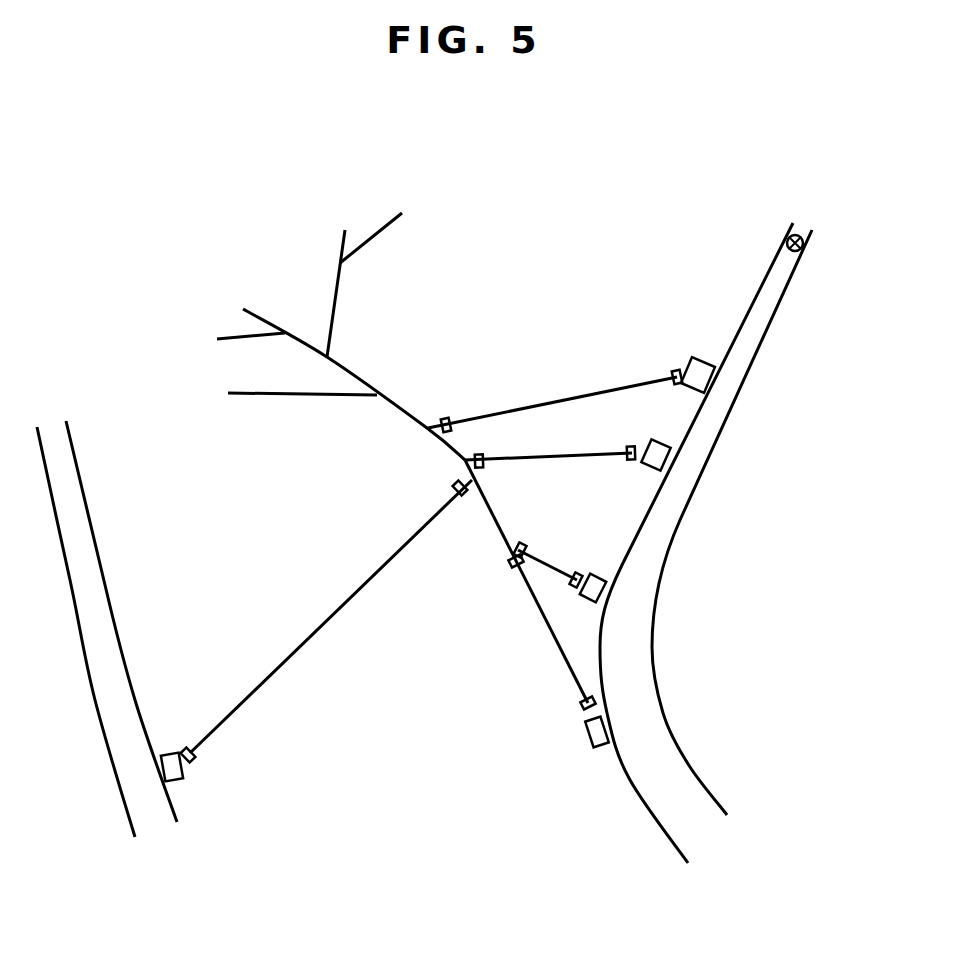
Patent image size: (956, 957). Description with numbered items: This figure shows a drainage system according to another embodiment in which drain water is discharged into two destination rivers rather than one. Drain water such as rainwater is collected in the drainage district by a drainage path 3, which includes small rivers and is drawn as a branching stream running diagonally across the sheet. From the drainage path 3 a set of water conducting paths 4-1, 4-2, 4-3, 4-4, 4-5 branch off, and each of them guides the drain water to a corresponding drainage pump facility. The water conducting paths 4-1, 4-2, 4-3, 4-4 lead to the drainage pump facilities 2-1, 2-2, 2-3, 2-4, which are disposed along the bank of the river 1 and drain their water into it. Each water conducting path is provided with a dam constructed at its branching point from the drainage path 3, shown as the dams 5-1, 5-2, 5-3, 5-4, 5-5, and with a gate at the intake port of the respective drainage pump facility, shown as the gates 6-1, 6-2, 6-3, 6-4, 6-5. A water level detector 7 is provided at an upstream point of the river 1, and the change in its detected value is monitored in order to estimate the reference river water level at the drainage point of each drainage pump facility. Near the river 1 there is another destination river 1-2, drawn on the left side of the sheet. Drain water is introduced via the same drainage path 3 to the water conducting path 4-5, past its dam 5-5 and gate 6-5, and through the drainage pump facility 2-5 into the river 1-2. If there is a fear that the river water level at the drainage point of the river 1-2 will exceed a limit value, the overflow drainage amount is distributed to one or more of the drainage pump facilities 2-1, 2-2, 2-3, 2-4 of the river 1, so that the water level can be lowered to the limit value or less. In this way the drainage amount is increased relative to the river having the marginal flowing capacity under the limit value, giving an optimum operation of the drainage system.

The river 1 is at (670, 543).
The destination river 1-2 is at (105, 595).
The drainage path 3 is at (362, 378).
The water conducting path 4-1 is at (557, 645).
The water conducting path 4-2 is at (557, 567).
The water conducting path 4-3 is at (574, 455).
The water conducting path 4-4 is at (562, 398).
The water conducting path 4-5 is at (307, 645).
The dam 5-1 is at (513, 562).
The dam 5-2 is at (520, 547).
The dam 5-3 is at (478, 455).
The dam 5-4 is at (447, 418).
The dam 5-5 is at (457, 483).
The gate 6-1 is at (585, 705).
The gate 6-2 is at (580, 577).
The gate 6-3 is at (630, 450).
The gate 6-4 is at (677, 373).
The gate 6-5 is at (195, 760).
The drainage pump facility 2-1 is at (587, 733).
The drainage pump facility 2-2 is at (587, 600).
The drainage pump facility 2-3 is at (648, 470).
The drainage pump facility 2-4 is at (705, 357).
The drainage pump facility 2-5 is at (177, 780).
The water level detector 7 is at (805, 245).